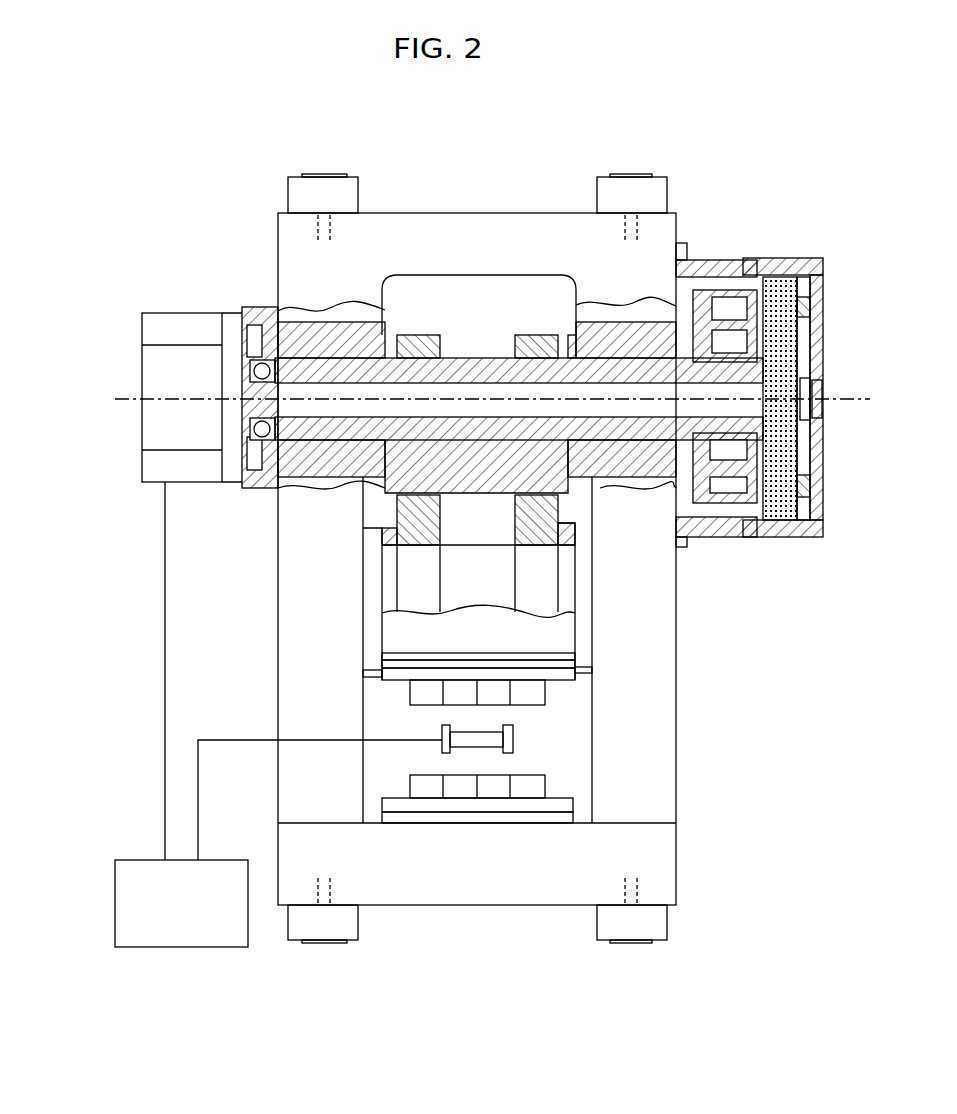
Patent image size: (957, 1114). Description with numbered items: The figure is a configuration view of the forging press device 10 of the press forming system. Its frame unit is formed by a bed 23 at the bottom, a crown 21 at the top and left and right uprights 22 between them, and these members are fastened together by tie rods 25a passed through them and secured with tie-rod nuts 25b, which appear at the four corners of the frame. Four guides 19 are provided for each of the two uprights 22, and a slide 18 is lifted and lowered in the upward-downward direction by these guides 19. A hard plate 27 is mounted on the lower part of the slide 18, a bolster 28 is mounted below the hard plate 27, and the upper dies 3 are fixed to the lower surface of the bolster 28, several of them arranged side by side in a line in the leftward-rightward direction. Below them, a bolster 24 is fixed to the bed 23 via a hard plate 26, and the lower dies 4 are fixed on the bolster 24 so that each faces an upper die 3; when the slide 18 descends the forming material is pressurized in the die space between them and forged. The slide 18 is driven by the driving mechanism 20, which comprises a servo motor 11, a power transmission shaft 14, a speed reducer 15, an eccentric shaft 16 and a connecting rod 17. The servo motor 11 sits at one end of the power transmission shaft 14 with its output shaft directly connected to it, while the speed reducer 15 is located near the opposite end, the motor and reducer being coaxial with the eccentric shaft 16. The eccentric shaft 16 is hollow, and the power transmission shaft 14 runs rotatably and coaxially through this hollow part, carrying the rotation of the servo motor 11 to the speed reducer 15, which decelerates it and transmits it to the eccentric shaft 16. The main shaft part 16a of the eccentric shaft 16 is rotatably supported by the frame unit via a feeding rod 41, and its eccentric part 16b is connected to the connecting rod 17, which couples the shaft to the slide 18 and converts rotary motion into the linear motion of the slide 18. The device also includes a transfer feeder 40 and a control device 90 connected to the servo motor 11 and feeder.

The forging press device 10 is at (500, 130).
The servo motor 11 is at (167, 317).
The power transmission shaft 14 is at (597, 407).
The speed reducer 15 is at (783, 258).
The eccentric shaft 16 is at (483, 378).
The main shaft part 16a is at (305, 355).
The eccentric part 16b is at (395, 490).
The connecting rod 17 is at (430, 570).
The slide 18 is at (387, 652).
The guides 19 is at (373, 605).
The driving mechanism 20 is at (792, 555).
The crown 21 is at (490, 230).
The uprights 22 is at (290, 821).
The bed 23 is at (663, 858).
The bolster 24 is at (382, 805).
The tie rods 25a is at (317, 232).
The tie-rod nuts 25b is at (348, 202).
The hard plate 26 is at (575, 820).
The hard plate 27 is at (380, 663).
The bolster 28 is at (592, 673).
The upper die 3 is at (410, 687).
The lower die 4 is at (450, 780).
The transfer feeder 40 is at (440, 732).
The feeding rod 41 is at (372, 345).
The control device 90 is at (115, 893).